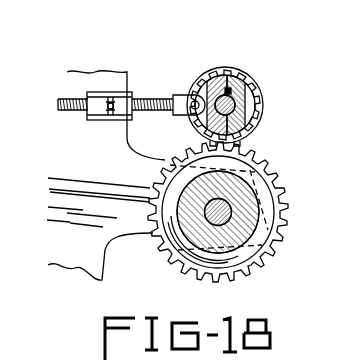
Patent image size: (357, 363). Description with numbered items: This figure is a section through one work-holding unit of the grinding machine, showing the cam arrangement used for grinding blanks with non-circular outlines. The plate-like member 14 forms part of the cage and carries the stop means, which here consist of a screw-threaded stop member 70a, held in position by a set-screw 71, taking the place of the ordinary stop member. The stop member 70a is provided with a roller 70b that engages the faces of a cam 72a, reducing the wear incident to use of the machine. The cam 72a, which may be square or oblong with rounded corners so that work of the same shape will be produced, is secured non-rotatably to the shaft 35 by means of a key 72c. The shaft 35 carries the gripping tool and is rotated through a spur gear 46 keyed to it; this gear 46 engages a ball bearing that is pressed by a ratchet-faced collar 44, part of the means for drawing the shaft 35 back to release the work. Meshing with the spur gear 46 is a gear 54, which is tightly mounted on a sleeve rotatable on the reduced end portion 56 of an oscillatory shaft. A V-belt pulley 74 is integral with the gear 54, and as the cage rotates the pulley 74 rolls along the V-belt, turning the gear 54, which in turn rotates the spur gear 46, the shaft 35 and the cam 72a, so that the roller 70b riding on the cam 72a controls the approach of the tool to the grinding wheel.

The plate-like member 14 is at (82, 263).
The stop member 70a is at (60, 100).
The set-screw 71 is at (123, 92).
The roller 70b is at (195, 90).
The cam 72a is at (233, 72).
The key 72c is at (228, 95).
The ratchet-faced collar 44 is at (258, 82).
The spur gear 46 is at (252, 104).
The shaft 35 is at (235, 108).
The gear 54 is at (287, 205).
The reduced end portion 56 is at (225, 212).
The V-belt pulley 74 is at (263, 250).